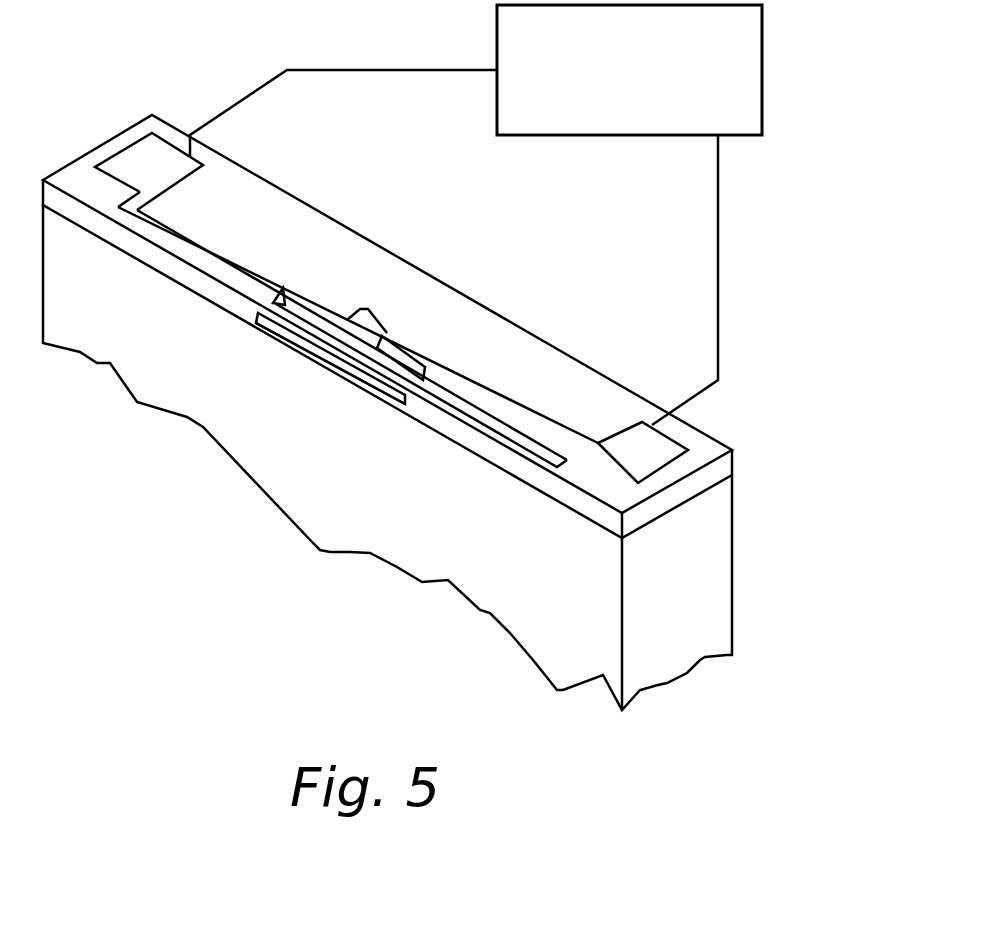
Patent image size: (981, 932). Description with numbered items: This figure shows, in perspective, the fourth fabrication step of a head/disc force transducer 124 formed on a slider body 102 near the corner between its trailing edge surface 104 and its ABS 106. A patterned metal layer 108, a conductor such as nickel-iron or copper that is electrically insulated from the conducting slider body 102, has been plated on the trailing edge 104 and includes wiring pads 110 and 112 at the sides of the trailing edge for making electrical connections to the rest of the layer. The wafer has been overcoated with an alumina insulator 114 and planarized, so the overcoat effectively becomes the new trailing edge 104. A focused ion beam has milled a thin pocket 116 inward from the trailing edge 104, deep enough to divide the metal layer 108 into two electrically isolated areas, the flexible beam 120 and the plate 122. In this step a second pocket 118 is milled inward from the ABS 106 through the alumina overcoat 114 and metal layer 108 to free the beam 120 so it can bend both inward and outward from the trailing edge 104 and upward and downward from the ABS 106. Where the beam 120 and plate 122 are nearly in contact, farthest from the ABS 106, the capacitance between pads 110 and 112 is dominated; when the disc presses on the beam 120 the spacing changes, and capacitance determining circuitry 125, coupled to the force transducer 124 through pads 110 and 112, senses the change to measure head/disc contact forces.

The slider body 102 is at (446, 412).
The trailing edge surface 104 is at (690, 309).
The ABS 106 is at (340, 527).
The patterned metal layer 108 is at (455, 358).
The wiring pad 110 is at (203, 149).
The wiring pad 112 is at (672, 435).
The alumina overcoat 114 is at (735, 460).
The pocket 116 is at (303, 297).
The pocket 118 is at (285, 337).
The flexible beam 120 is at (377, 382).
The plate 122 is at (420, 317).
The force transducer 124 is at (357, 325).
The capacitance determining circuitry 125 is at (762, 72).